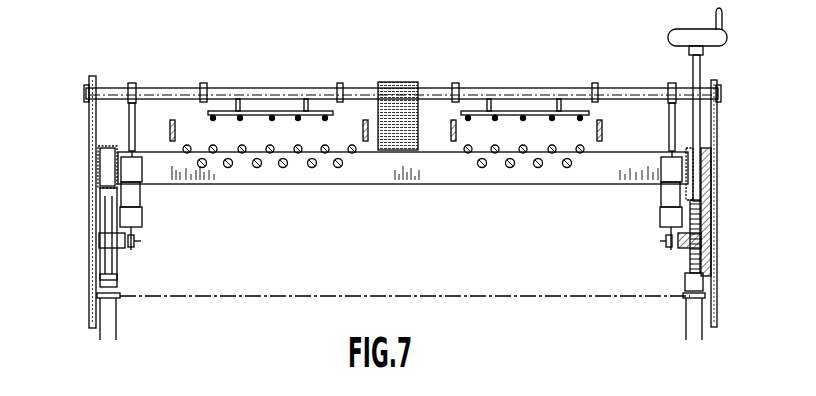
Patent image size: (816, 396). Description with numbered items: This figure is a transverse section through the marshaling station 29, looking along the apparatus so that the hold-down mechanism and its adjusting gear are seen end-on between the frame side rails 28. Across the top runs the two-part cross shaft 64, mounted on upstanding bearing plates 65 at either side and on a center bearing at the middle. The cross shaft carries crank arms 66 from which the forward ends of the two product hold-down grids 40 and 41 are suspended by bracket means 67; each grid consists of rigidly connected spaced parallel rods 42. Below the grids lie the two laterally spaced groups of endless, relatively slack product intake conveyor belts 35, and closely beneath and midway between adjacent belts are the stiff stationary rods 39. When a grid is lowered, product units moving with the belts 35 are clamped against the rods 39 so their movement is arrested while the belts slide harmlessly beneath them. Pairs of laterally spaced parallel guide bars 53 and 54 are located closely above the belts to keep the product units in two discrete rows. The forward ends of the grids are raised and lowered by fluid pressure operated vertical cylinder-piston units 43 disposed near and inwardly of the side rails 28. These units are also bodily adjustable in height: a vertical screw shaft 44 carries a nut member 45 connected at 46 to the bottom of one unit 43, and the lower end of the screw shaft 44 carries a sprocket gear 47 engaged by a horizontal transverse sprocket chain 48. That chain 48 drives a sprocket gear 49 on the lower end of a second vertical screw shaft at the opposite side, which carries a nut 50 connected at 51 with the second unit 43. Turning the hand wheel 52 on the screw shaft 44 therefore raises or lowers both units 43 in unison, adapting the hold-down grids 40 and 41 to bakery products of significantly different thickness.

The marshaling station 29 is at (192, 66).
The upstanding bearing plates 65 is at (89, 120).
The cross shaft section 64 is at (156, 87).
The crank arms 66 is at (204, 84).
The bracket means 67 is at (306, 110).
The product hold-down grid 40 is at (263, 110).
The product hold-down grid 41 is at (520, 110).
The parallel rods 42 is at (240, 121).
The stiff rods 39 is at (257, 168).
The product intake conveyor belts 35 is at (297, 145).
The guide bars 53 is at (170, 131).
The guide bars 54 is at (451, 131).
The cylinder-piston units 43 is at (129, 84).
The frame side rails 28 is at (98, 166).
The nut 50 is at (99, 240).
The connection 51 is at (141, 241).
The sprocket gear 49 is at (110, 303).
The hand wheel 52 is at (690, 29).
The vertical screw shaft 44 is at (700, 219).
The nut member 45 is at (702, 241).
The connection 46 is at (660, 241).
The sprocket gear 47 is at (686, 303).
The sprocket chain 48 is at (496, 299).